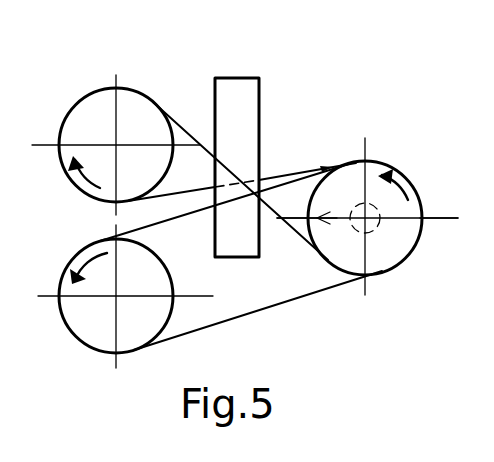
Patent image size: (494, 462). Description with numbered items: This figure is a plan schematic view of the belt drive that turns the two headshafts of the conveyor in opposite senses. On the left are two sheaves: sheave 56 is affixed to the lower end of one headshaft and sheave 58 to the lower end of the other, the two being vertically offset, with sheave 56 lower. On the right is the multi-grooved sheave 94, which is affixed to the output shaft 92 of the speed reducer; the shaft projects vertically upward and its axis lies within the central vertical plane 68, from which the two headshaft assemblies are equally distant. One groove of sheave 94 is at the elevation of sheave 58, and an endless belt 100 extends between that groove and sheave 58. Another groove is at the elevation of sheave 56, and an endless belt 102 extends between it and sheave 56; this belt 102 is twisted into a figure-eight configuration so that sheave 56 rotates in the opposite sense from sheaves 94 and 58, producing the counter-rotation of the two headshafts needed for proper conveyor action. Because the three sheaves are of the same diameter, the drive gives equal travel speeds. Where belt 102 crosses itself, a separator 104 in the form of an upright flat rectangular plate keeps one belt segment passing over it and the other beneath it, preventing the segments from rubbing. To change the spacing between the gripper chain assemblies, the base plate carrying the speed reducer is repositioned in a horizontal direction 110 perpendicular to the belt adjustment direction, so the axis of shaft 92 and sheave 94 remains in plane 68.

The sheave 56 is at (85, 112).
The sheave 58 is at (100, 322).
The multi-grooved sheave 94 is at (385, 258).
The output shaft 92 is at (378, 223).
The central vertical plane 68 is at (424, 220).
The endless belt 102 is at (177, 123).
The endless belt 100 is at (227, 322).
The separator 104 is at (260, 100).
The horizontal direction 110 is at (337, 219).